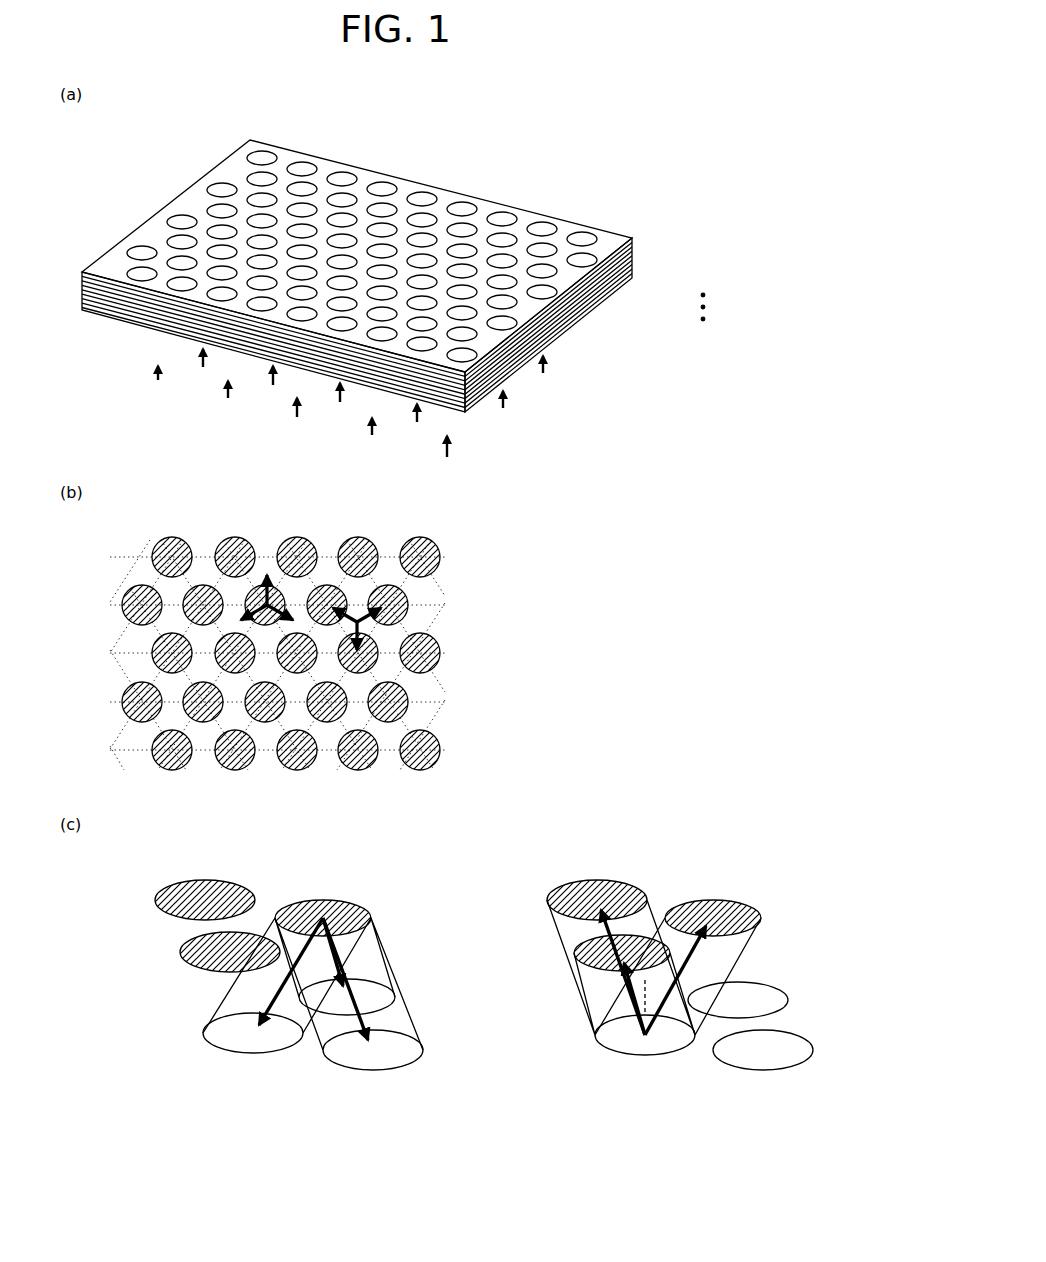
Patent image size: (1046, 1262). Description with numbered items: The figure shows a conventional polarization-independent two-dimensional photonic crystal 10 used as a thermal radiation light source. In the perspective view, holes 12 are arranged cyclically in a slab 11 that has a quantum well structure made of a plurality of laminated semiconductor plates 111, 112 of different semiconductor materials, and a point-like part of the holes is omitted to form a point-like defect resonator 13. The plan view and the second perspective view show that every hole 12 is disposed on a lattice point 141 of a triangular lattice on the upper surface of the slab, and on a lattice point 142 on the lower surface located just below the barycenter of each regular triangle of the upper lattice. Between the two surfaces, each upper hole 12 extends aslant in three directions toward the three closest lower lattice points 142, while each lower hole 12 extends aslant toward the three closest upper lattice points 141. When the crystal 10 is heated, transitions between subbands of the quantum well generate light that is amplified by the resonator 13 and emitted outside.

The two-dimensional photonic crystal 10 is at (424, 278).
The slab 11 is at (424, 298).
The semiconductor plate 111 is at (635, 244).
The semiconductor plate 112 is at (677, 245).
The hole 12 is at (467, 193).
The point-like defect resonator 13 is at (283, 146).
The lattice point 141 is at (243, 535).
The lattice point 142 is at (331, 551).